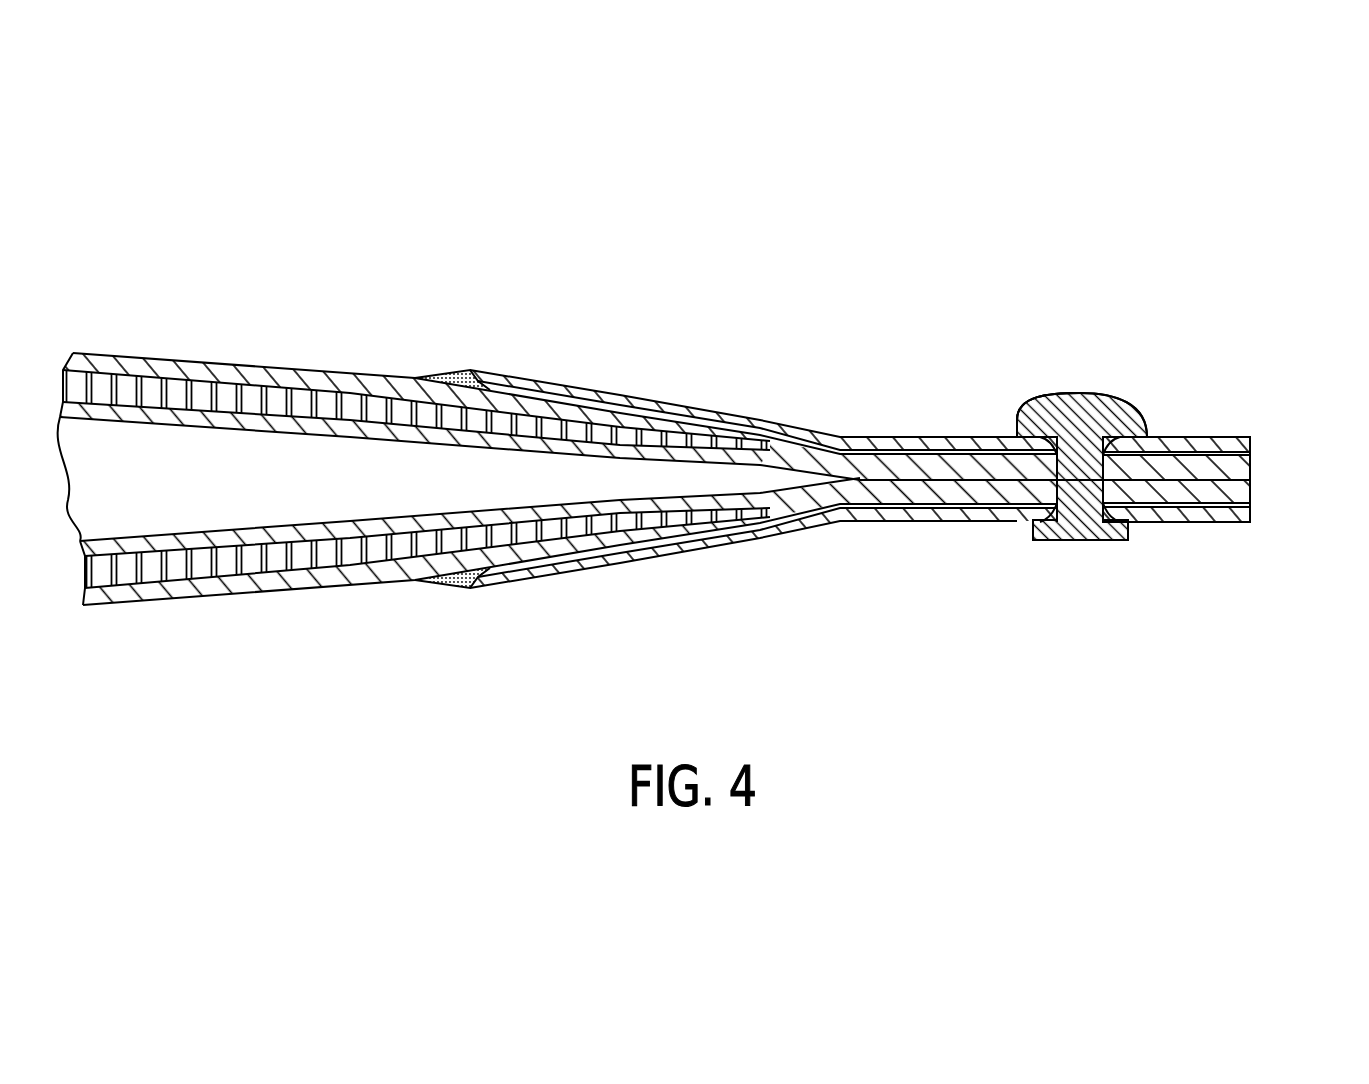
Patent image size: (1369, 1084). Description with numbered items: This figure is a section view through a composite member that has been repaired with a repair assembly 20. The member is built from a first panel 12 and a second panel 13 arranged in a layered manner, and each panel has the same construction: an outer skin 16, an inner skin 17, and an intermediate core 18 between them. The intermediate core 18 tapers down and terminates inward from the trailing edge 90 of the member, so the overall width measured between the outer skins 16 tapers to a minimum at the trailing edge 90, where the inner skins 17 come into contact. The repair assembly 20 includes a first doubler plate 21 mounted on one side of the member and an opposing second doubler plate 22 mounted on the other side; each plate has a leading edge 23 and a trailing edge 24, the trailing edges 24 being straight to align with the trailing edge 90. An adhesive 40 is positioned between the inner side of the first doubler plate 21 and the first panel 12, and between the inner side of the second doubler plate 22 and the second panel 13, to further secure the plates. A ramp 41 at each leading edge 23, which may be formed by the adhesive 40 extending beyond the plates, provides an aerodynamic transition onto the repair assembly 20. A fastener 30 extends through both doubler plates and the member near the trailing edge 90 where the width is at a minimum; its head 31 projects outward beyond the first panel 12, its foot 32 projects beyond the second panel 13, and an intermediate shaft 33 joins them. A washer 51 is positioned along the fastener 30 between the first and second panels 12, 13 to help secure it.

The first panel 12 is at (103, 378).
The second panel 13 is at (128, 590).
The outer skin 16 is at (187, 378).
The inner skin 17 is at (253, 392).
The intermediate core 18 is at (350, 405).
The repair assembly 20 is at (1063, 318).
The first doubler plate 21 is at (590, 393).
The second doubler plate 22 is at (690, 553).
The leading edge 23 is at (478, 372).
The trailing edge 24 is at (1252, 440).
The fastener 30 is at (1110, 393).
The head 31 is at (1030, 400).
The foot 32 is at (1072, 542).
The intermediate shaft 33 is at (1035, 488).
The adhesive 40 is at (680, 426).
The ramp 41 is at (432, 376).
The washer 51 is at (1135, 425).
The trailing edge 90 is at (1252, 470).